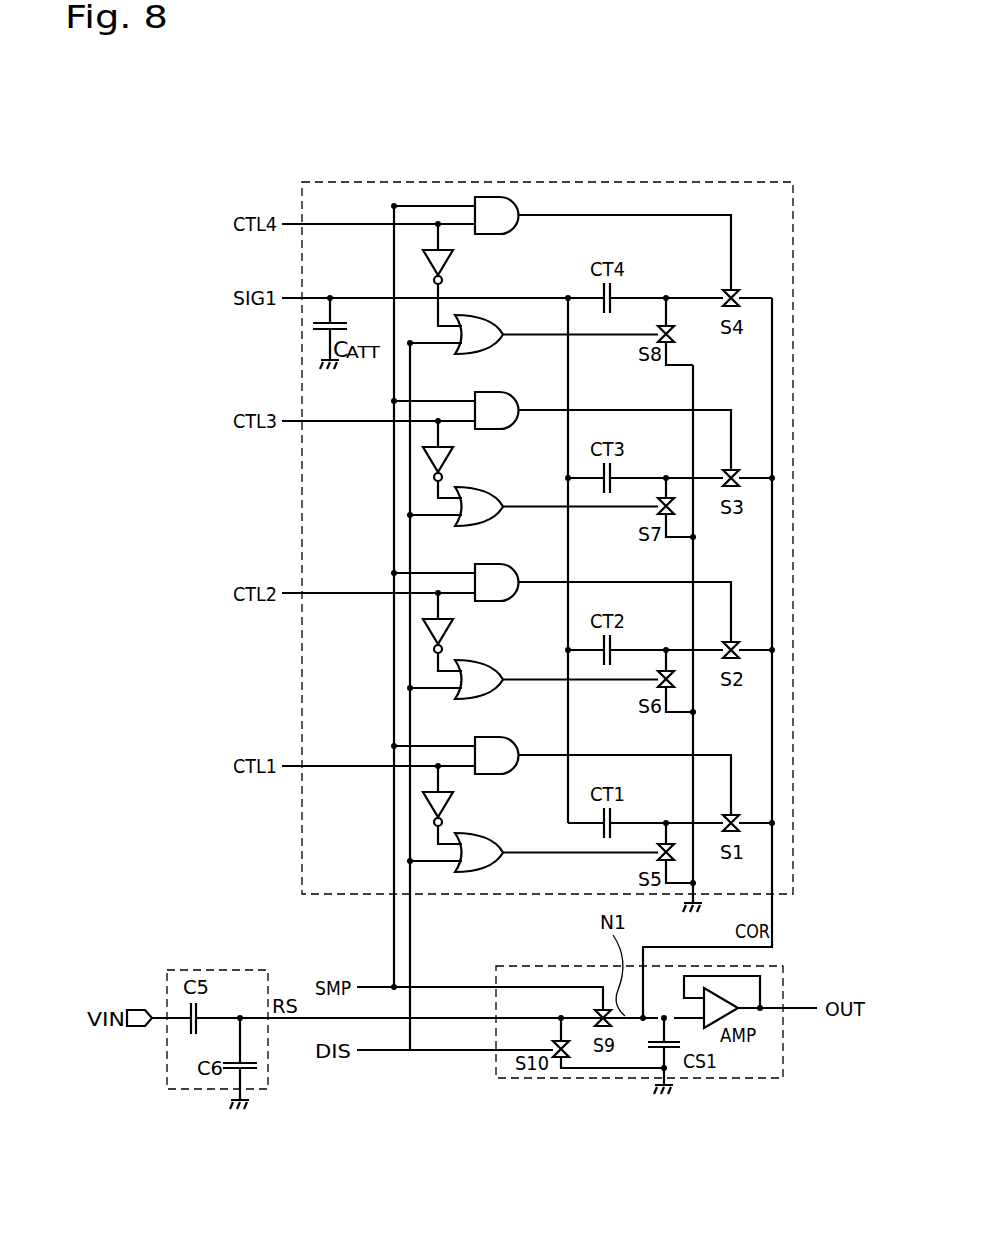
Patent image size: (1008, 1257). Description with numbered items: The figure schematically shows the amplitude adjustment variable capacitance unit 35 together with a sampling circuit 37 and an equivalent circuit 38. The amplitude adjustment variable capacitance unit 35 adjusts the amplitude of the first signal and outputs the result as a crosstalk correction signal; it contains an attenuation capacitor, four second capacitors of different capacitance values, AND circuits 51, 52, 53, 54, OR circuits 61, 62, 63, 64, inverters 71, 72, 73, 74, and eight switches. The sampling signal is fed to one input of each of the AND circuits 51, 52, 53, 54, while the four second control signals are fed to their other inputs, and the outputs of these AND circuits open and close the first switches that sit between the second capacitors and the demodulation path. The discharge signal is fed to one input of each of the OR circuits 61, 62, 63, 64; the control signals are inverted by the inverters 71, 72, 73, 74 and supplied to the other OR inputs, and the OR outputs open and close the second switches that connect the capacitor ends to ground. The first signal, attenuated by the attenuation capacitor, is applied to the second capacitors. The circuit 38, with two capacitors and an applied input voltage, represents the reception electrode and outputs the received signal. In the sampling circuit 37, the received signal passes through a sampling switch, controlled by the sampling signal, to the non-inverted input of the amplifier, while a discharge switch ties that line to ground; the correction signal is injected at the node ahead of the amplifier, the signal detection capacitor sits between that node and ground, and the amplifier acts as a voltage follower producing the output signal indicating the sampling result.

The amplitude adjustment variable capacitance unit 35 is at (302, 872).
The sampling circuit 37 is at (787, 978).
The circuit 38 is at (180, 968).
The AND circuit 51 is at (497, 775).
The AND circuit 52 is at (497, 602).
The AND circuit 53 is at (497, 430).
The AND circuit 54 is at (497, 235).
The OR circuit 61 is at (497, 870).
The OR circuit 62 is at (494, 698).
The OR circuit 63 is at (494, 525).
The OR circuit 64 is at (494, 353).
The inverter 71 is at (452, 807).
The inverter 72 is at (452, 634).
The inverter 73 is at (452, 462).
The inverter 74 is at (452, 265).